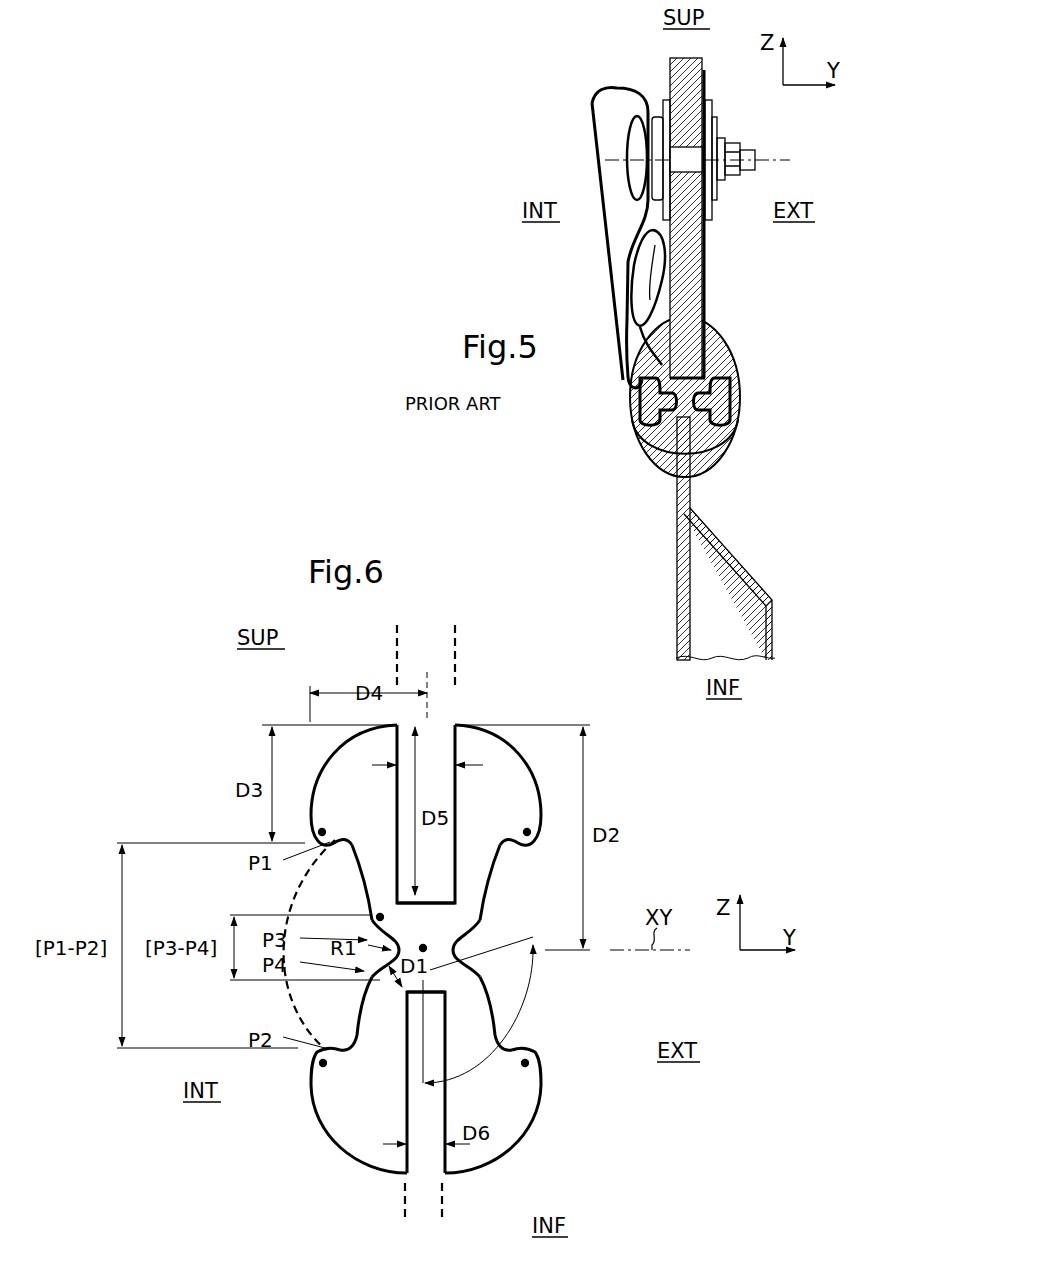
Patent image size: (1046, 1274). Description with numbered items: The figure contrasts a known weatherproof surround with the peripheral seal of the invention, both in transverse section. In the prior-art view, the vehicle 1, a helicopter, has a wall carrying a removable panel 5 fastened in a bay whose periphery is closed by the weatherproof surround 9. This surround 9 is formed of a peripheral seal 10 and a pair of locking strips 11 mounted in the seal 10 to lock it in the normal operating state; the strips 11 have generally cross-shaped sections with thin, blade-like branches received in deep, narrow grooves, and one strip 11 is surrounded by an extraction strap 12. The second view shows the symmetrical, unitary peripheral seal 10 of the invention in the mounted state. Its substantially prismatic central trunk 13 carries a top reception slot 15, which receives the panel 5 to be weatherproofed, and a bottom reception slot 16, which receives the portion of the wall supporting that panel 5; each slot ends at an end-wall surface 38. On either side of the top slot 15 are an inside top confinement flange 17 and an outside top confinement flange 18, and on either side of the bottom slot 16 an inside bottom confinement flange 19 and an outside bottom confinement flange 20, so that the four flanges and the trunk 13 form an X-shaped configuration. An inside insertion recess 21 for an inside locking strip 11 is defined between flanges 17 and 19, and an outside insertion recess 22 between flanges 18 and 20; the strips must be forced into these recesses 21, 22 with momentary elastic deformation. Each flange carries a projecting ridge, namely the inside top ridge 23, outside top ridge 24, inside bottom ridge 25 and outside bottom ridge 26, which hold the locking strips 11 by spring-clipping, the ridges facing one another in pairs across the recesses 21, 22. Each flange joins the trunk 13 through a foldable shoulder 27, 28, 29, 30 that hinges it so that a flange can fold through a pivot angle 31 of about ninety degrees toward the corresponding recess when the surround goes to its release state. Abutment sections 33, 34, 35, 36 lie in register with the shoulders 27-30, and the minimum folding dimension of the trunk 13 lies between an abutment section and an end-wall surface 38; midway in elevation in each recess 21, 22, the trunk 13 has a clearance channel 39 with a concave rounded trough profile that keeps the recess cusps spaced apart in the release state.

In FIG. 5, the vehicle 1 is at (679, 344).
In FIG. 5, the removable panel 5 is at (670, 76).
In FIG. 6, the removable panel 5 is at (455, 655).
In FIG. 5, the weatherproof surround 9 is at (693, 375).
In FIG. 5, the peripheral seal 10 is at (720, 350).
In FIG. 5, the locking strip 11 is at (731, 400).
In FIG. 6, the locking strip 11 is at (305, 1005).
In FIG. 5, the extraction strap 12 is at (597, 92).
In FIG. 6, the central trunk 13 is at (426, 936).
In FIG. 6, the top reception slot 15 is at (441, 731).
In FIG. 6, the bottom reception slot 16 is at (426, 1176).
In FIG. 6, the inside top confinement flange 17 is at (336, 759).
In FIG. 6, the outside top confinement flange 18 is at (516, 754).
In FIG. 6, the inside bottom confinement flange 19 is at (337, 1147).
In FIG. 6, the outside bottom confinement flange 20 is at (513, 1147).
In FIG. 6, the inside insertion recess 21 is at (346, 845).
In FIG. 6, the outside insertion recess 22 is at (566, 1017).
In FIG. 6, the inside top projecting ridge 23 is at (322, 832).
In FIG. 6, the outside top projecting ridge 24 is at (527, 832).
In FIG. 6, the inside bottom projecting ridge 25 is at (323, 1063).
In FIG. 6, the outside bottom projecting ridge 26 is at (525, 1063).
In FIG. 6, the foldable shoulder 27 is at (380, 917).
In FIG. 6, the foldable shoulder 28 is at (478, 893).
In FIG. 6, the foldable shoulder 29 is at (360, 1003).
In FIG. 6, the foldable shoulder 30 is at (467, 1003).
In FIG. 6, the pivot angle 31 is at (537, 992).
In FIG. 6, the inside top abutment section 33 is at (360, 890).
In FIG. 6, the outside top abutment section 34 is at (490, 862).
In FIG. 6, the inside bottom abutment section 35 is at (365, 1018).
In FIG. 6, the outside bottom abutment section 36 is at (484, 1005).
In FIG. 6, the end-wall surface 38 is at (437, 900).
In FIG. 6, the clearance channel 39 is at (364, 927).